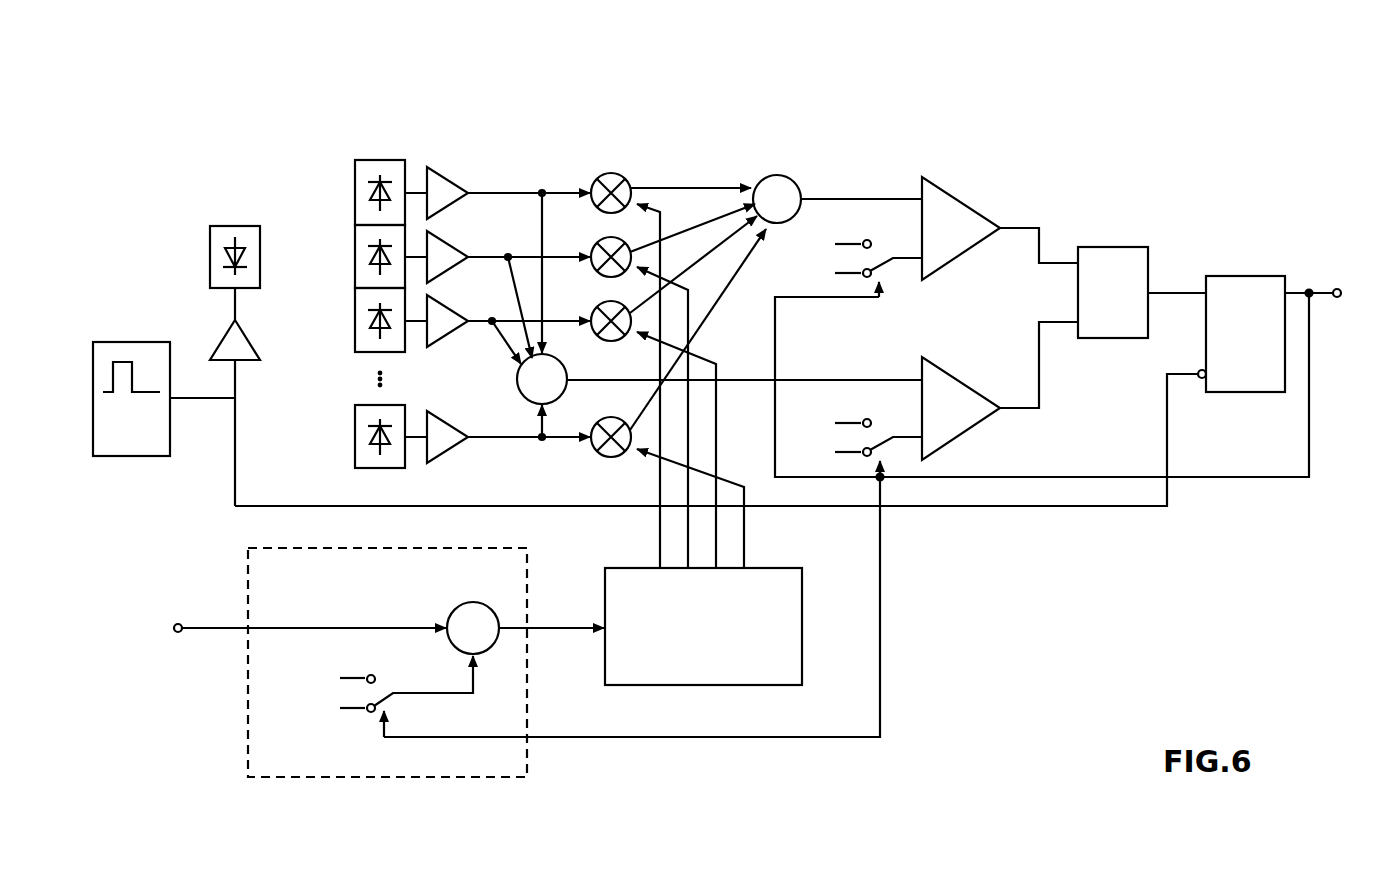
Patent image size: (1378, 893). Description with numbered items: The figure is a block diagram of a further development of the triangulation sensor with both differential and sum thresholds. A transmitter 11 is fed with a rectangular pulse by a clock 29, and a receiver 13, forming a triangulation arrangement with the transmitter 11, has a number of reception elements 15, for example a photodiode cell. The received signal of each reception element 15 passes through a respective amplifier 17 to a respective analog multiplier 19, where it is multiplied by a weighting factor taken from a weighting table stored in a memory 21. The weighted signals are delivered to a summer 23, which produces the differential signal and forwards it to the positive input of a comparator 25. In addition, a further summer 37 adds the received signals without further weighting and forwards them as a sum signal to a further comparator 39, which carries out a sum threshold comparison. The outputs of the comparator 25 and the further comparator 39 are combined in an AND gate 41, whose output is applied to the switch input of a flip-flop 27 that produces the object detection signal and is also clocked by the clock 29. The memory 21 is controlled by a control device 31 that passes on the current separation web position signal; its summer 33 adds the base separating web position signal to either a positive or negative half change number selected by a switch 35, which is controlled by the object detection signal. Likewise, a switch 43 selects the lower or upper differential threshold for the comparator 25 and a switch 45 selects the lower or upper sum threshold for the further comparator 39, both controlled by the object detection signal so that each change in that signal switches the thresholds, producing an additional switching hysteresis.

The transmitter 11 is at (225, 226).
The receiver 13 is at (383, 160).
The reception elements 15 is at (355, 195).
The amplifier 17 is at (452, 179).
The analog multiplier 19 is at (613, 173).
The memory 21 is at (802, 653).
The summer 23 is at (778, 175).
The comparator 25 is at (960, 195).
The flip-flop 27 is at (1258, 276).
The clock 29 is at (147, 342).
The control device 31 is at (248, 745).
The summer 33 is at (458, 608).
The switch 35 is at (365, 725).
The further summer 37 is at (517, 387).
The further comparator 39 is at (965, 375).
The AND gate 41 is at (1122, 247).
The switch 43 is at (883, 243).
The switch 45 is at (883, 423).